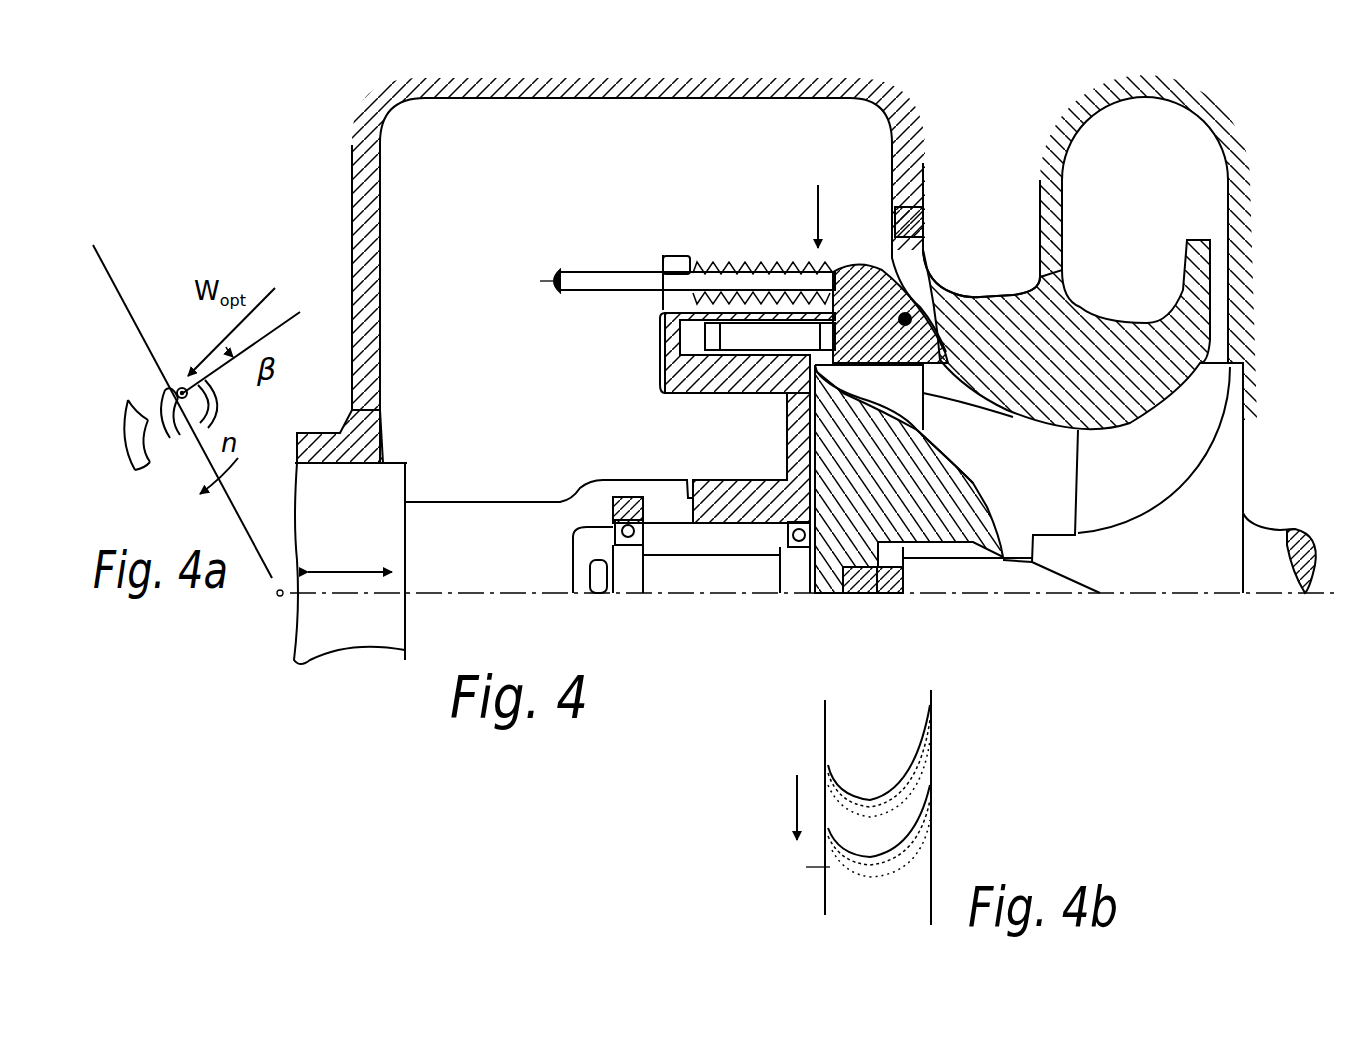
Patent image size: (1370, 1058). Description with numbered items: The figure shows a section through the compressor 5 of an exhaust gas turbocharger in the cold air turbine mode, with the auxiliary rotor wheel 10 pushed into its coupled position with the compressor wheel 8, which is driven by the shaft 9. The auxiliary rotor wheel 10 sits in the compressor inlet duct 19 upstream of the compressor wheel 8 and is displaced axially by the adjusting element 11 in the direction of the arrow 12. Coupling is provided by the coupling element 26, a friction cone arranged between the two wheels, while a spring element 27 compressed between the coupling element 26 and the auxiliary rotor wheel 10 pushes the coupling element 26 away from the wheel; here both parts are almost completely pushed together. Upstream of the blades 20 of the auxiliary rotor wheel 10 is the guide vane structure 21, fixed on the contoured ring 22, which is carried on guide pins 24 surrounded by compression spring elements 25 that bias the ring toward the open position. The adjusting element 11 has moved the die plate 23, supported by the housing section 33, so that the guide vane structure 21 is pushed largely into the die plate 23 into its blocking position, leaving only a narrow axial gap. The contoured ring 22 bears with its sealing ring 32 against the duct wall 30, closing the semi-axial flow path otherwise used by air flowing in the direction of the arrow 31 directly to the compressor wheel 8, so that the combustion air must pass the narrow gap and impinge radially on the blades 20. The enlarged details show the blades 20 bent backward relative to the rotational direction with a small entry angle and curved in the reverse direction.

In FIG. 4, the compressor 5 is at (916, 81).
In FIG. 4, the compressor inlet duct 19 is at (504, 184).
In FIG. 4, the guide pins 24 is at (614, 272).
In FIG. 4, the compression spring elements 25 is at (713, 266).
In FIG. 4, the guide vane structure 21 is at (745, 300).
In FIG. 4, the die plate 23 is at (668, 335).
In FIG. 4, the contoured ring 22 is at (848, 270).
In FIG. 4, the sealing ring 32 is at (912, 313).
In FIG. 4, the duct wall 30 is at (981, 294).
In FIG. 4, the arrow 31 is at (975, 413).
In FIG. 4, the auxiliary rotor wheel 10 is at (958, 492).
In FIG. 4, the blades 20 is at (910, 403).
In FIG. 4A, the blades 20 is at (160, 400).
In FIG. 4B, the blades 20 is at (930, 797).
In FIG. 4, the housing section 33 is at (792, 437).
In FIG. 4, the coupling element 26 is at (972, 580).
In FIG. 4, the spring element 27 is at (882, 586).
In FIG. 4, the compressor wheel 8 is at (1180, 575).
In FIG. 4, the shaft 9 is at (1276, 541).
In FIG. 4, the adjusting element 11 is at (326, 652).
In FIG. 4, the arrow 12 is at (350, 567).